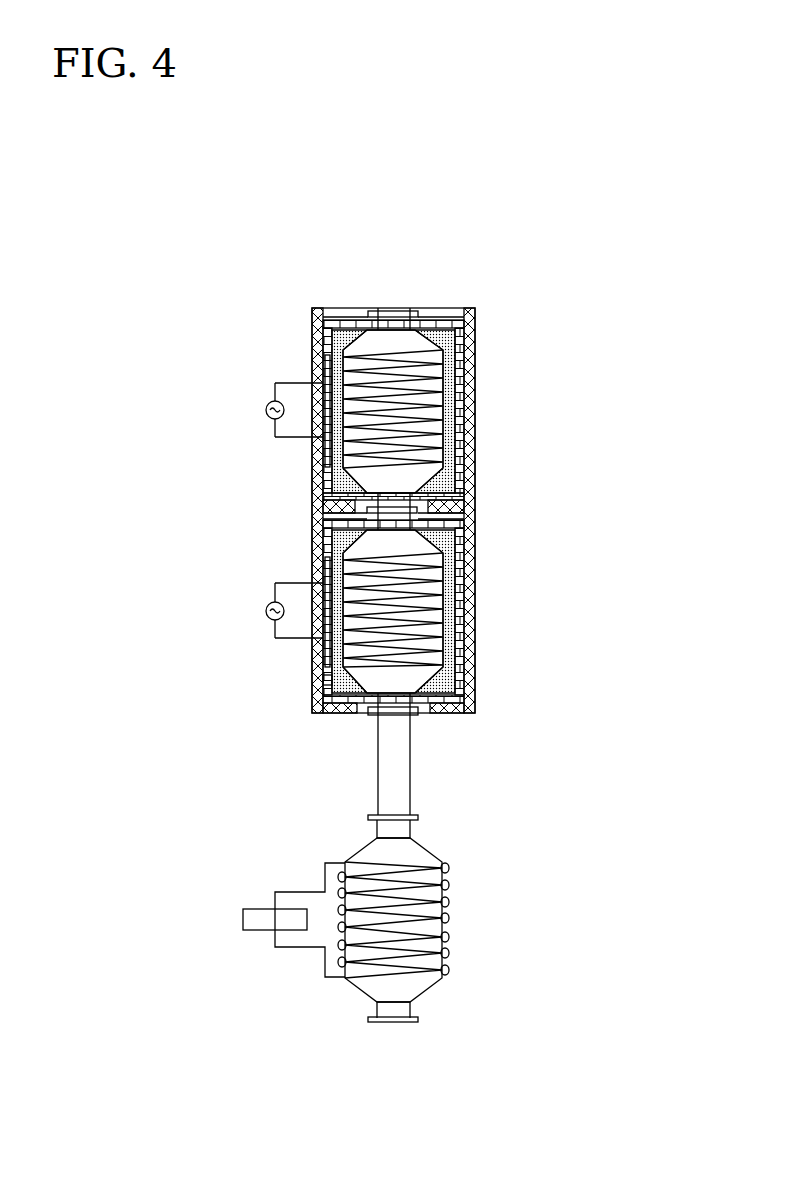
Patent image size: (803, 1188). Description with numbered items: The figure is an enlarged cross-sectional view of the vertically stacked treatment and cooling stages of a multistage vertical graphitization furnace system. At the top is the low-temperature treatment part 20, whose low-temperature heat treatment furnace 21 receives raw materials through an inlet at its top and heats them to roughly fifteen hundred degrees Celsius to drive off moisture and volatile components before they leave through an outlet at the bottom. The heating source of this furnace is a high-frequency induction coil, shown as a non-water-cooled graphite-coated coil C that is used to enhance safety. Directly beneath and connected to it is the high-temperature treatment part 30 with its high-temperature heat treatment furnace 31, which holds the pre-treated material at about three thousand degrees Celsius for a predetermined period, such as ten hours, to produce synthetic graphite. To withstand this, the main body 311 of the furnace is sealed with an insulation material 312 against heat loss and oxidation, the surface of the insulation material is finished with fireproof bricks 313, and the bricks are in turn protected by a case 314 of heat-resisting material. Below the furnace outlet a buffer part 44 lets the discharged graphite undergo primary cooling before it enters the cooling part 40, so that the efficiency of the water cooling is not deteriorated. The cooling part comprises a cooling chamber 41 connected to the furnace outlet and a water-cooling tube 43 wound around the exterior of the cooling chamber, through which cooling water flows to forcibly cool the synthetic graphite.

The low-temperature treatment part 20 is at (481, 395).
The low-temperature heat treatment furnace 21 is at (420, 478).
The high-temperature treatment part 30 is at (481, 598).
The high-temperature heat treatment furnace 31 is at (420, 680).
The main body 311 is at (393, 611).
The insulation material 312 is at (465, 543).
The fireproof bricks 313 is at (322, 682).
The case 314 is at (473, 639).
The non-water-cooled graphite-coated coil C is at (367, 433).
The cooling part 40 is at (453, 920).
The cooling chamber 41 is at (422, 990).
The water-cooling tube 43 is at (370, 933).
The buffer part 44 is at (412, 766).